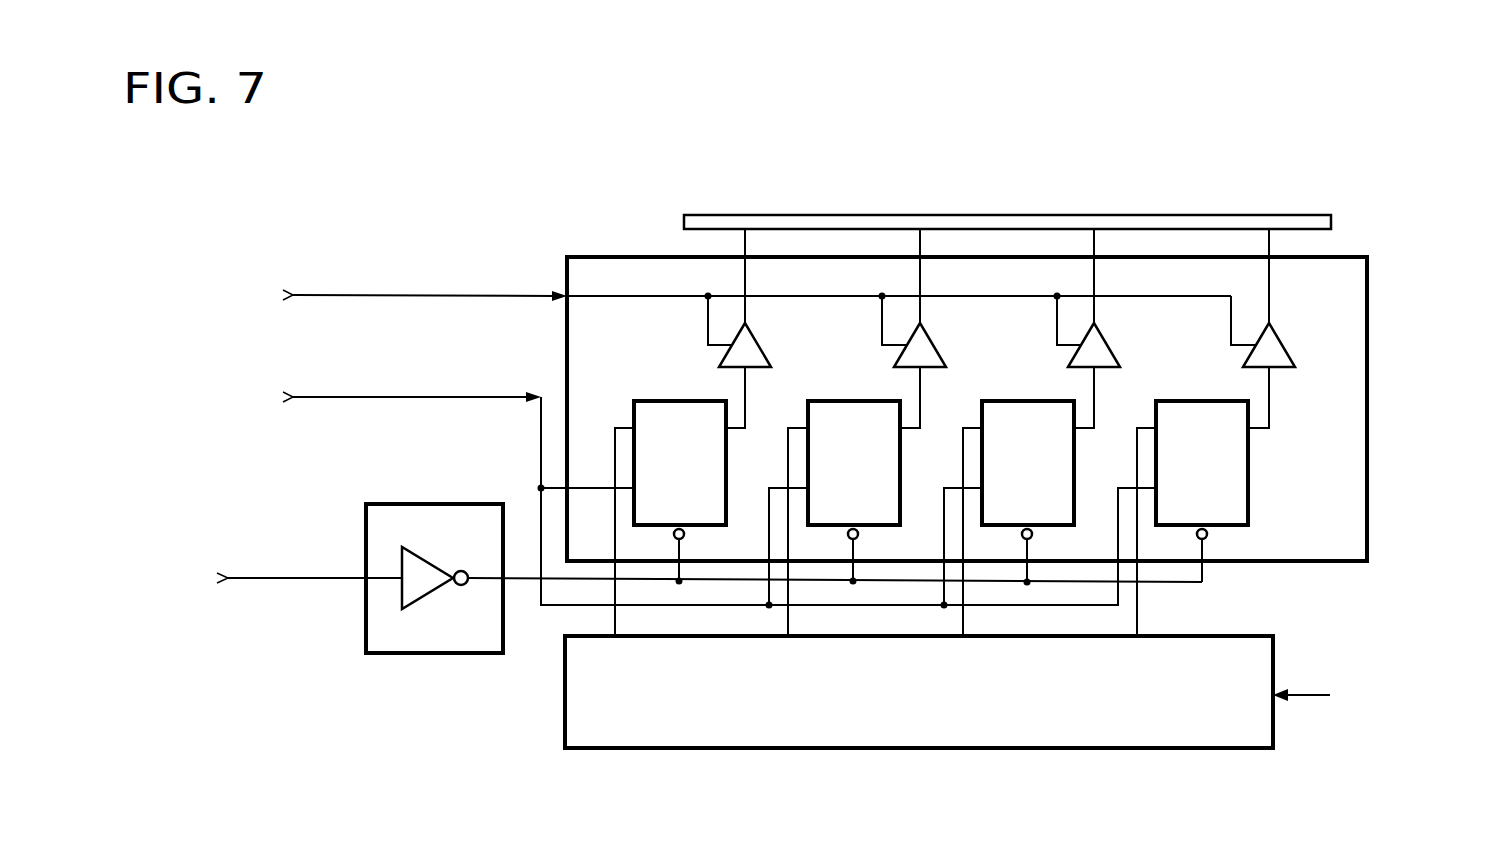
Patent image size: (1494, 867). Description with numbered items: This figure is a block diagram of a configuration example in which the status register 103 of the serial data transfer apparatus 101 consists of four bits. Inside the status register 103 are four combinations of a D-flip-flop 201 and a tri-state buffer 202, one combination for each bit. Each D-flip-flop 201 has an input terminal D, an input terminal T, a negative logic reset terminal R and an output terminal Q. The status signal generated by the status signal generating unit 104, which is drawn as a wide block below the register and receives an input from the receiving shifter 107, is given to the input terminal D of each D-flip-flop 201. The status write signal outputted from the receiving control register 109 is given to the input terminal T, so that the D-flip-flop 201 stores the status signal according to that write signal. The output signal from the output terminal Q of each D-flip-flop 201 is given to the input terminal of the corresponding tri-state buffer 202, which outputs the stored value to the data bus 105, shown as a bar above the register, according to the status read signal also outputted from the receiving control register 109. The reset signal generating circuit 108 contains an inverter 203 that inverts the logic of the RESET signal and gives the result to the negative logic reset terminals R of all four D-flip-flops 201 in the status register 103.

The serial data transfer apparatus 101 is at (208, 593).
The status register 103 is at (1367, 318).
The status signal generating unit 104 is at (1275, 652).
The data bus 105 is at (1313, 195).
The receiving shifter 107 is at (1403, 711).
The reset signal generating circuit 108 is at (437, 655).
The receiving control register 109 is at (276, 307).
The D-flip-flop 201 is at (660, 401).
The tri-state buffer 202 is at (787, 333).
The inverter 203 is at (452, 545).